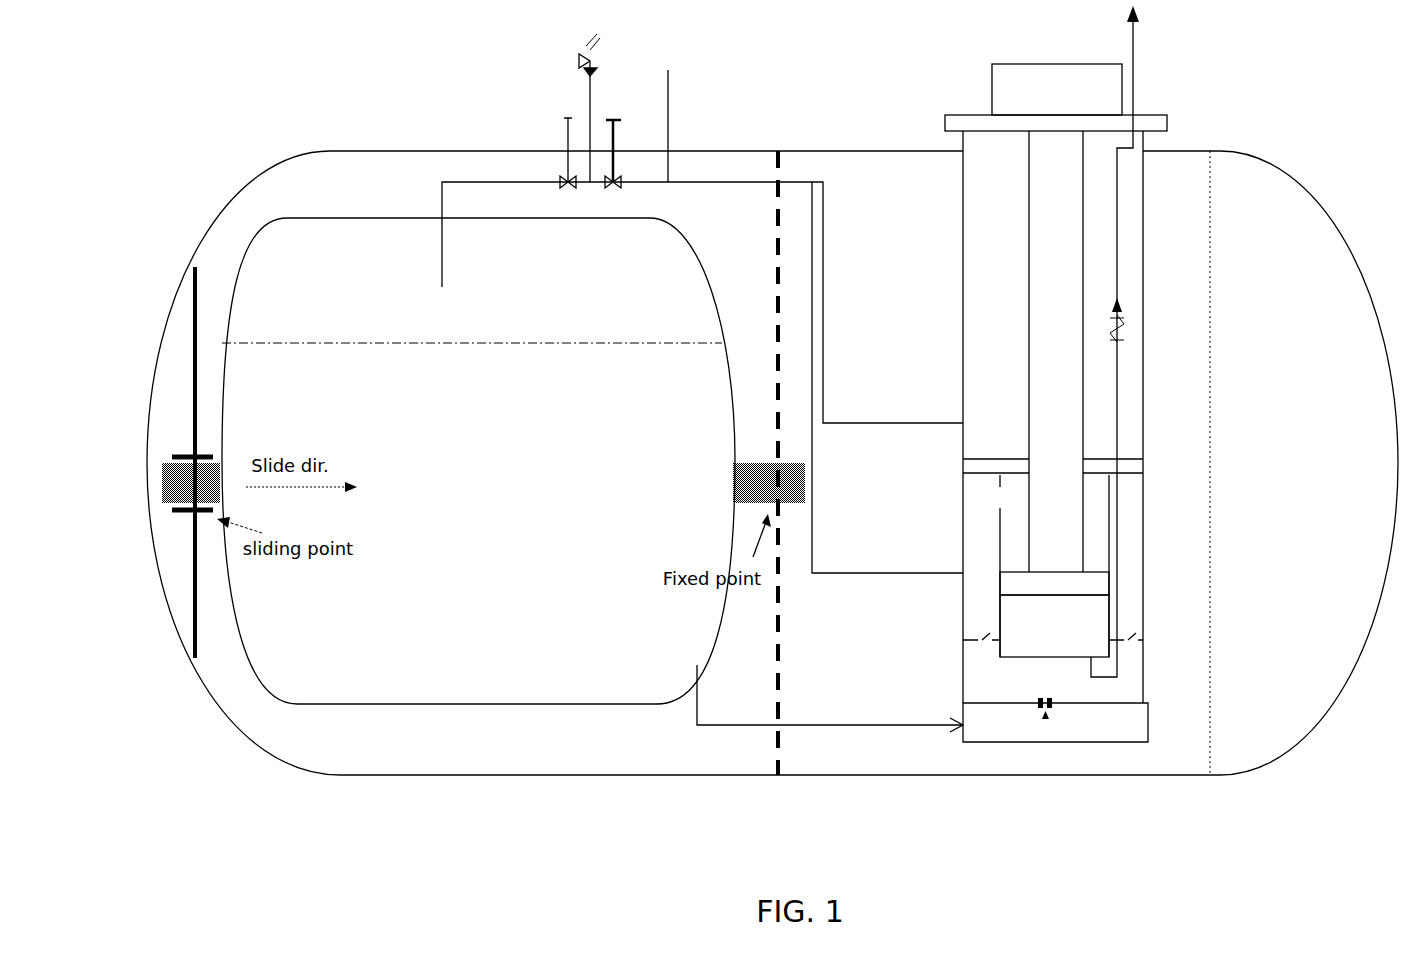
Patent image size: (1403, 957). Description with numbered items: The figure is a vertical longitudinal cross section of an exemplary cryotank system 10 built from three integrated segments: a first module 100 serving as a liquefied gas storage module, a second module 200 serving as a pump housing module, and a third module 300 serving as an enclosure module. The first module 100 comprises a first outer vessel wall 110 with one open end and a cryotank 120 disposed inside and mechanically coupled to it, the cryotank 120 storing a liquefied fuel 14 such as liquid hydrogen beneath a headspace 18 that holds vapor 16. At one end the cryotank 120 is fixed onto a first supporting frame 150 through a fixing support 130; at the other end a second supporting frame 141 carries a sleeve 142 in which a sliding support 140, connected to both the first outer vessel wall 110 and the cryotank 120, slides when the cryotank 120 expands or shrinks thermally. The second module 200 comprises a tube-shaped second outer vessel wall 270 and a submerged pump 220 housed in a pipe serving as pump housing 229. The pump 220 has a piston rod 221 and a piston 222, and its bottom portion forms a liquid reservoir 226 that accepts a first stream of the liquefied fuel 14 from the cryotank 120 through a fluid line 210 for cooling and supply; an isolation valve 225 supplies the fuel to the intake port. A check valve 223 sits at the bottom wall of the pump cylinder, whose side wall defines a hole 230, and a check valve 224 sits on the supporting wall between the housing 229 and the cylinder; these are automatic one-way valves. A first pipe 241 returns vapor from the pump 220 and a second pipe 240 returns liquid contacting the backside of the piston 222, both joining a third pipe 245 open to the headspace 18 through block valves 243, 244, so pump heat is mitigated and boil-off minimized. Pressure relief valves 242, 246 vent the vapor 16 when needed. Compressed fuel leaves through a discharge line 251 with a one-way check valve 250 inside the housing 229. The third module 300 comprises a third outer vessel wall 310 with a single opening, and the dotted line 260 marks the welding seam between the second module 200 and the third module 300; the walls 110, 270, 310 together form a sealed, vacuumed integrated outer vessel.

The system 10 is at (140, 45).
The first module 100 is at (483, 805).
The second module 200 is at (974, 815).
The third module 300 is at (1310, 805).
The first outer vessel wall 110 is at (683, 449).
The second outer vessel wall 270 is at (999, 137).
The third outer vessel wall 310 is at (1309, 463).
The dotted line 260 is at (1233, 463).
The cryotank 120 is at (478, 461).
The liquefied fuel 14 is at (622, 370).
The vapor 16 is at (472, 326).
The headspace 18 is at (503, 268).
The first supporting frame 150 is at (759, 463).
The fixing support 130 is at (740, 483).
The sliding support 140 is at (157, 483).
The second supporting frame 141 is at (181, 462).
The sleeve 142 is at (177, 468).
The third pipe 245 is at (543, 252).
The first pipe 241 is at (815, 302).
The second pipe 240 is at (887, 377).
The pressure relief valve 242 is at (690, 126).
The block valve 243 is at (612, 172).
The block valve 244 is at (552, 168).
The pressure relief valve 246 is at (610, 107).
The fluid line 210 is at (830, 698).
The pump 220 is at (1056, 78).
The pump housing 229 is at (1040, 417).
The piston rod 221 is at (1056, 351).
The piston 222 is at (1054, 583).
The check valve 223 is at (1054, 626).
The hole 230 is at (1028, 566).
The check valve 224 is at (1052, 666).
The isolation valve 225 is at (1065, 716).
The liquid reservoir 226 is at (1055, 737).
The discharge line 251 is at (1135, 341).
The check valve 250 is at (1108, 339).